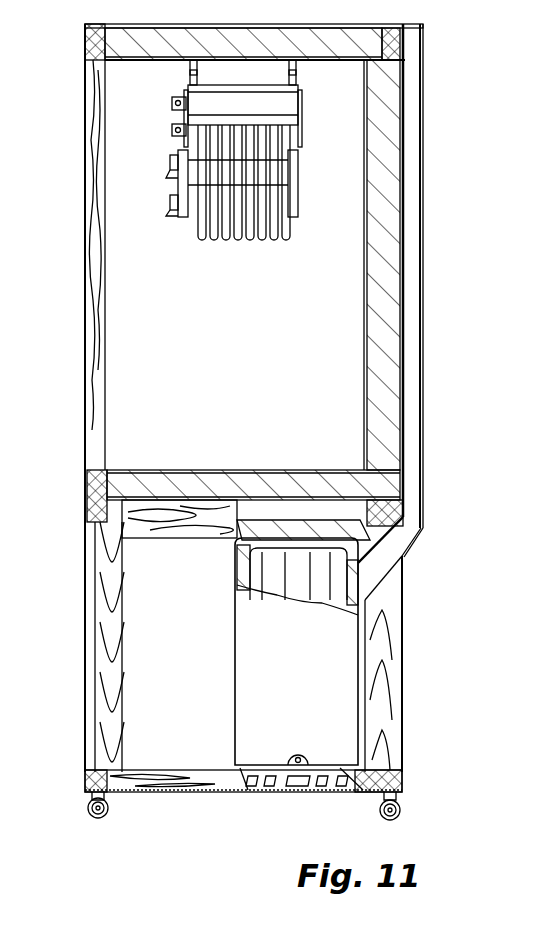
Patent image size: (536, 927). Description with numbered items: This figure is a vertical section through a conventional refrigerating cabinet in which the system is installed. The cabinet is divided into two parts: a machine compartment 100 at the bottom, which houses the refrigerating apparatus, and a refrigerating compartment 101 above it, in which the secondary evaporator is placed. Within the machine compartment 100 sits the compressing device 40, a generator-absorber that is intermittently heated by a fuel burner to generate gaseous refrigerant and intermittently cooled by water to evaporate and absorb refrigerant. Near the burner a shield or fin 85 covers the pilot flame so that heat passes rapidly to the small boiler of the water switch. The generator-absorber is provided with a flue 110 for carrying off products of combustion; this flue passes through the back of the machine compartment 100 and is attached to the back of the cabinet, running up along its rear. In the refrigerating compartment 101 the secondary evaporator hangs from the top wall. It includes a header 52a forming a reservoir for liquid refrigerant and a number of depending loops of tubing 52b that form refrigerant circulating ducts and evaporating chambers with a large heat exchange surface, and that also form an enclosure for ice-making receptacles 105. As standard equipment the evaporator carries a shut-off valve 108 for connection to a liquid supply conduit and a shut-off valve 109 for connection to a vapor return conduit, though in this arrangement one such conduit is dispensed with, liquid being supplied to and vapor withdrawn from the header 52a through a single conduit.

The flue 110 is at (410, 375).
The refrigerating compartment 101 is at (125, 413).
The header 52a is at (300, 110).
The loops of tubing 52b is at (285, 240).
The shut-off valve 109 is at (172, 103).
The shut-off valve 108 is at (172, 128).
The ice-making receptacles 105 is at (170, 203).
The compressing device 40 is at (250, 640).
The shield or fin 85 is at (305, 765).
The machine compartment 100 is at (178, 750).